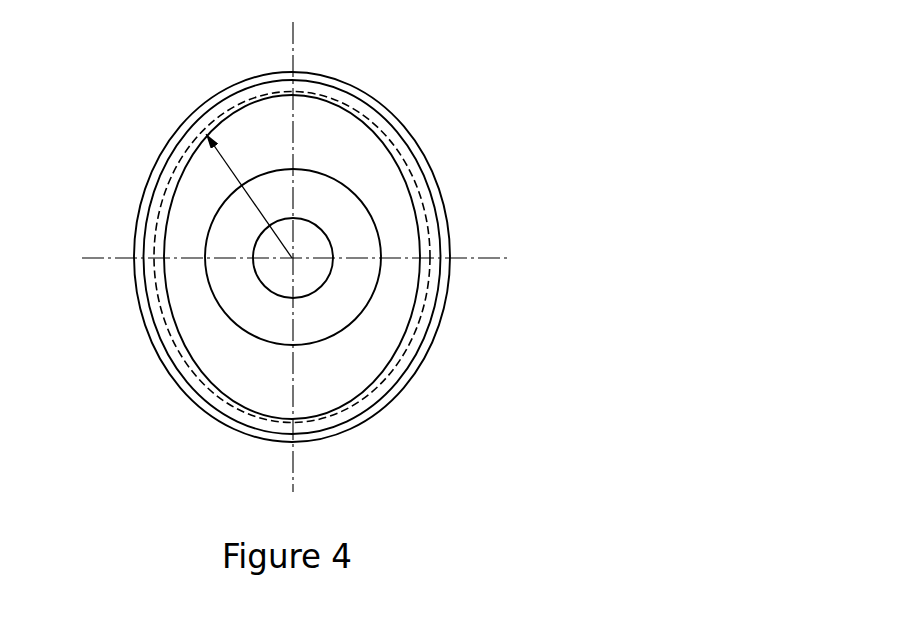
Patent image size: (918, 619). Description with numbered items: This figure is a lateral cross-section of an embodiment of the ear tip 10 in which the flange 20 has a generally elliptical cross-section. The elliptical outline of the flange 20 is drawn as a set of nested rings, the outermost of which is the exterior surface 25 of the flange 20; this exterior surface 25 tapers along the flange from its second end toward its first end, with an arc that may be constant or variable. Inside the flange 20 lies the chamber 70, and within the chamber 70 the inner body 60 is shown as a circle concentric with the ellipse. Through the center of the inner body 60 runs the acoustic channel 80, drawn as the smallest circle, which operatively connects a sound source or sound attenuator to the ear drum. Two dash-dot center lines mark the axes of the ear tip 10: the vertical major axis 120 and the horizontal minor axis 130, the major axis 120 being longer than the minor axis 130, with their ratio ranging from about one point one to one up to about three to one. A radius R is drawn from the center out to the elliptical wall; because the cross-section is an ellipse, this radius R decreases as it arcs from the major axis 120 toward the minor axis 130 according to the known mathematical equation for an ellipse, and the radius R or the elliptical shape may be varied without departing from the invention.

The ear tip 10 is at (500, 205).
The annular flange 20 is at (412, 143).
The exterior surface 25 is at (438, 337).
The inner body 60 is at (349, 283).
The chamber 70 is at (347, 363).
The acoustic channel 80 is at (282, 270).
The radius R is at (230, 176).
The major axis 120 is at (294, 40).
The minor axis 130 is at (100, 256).